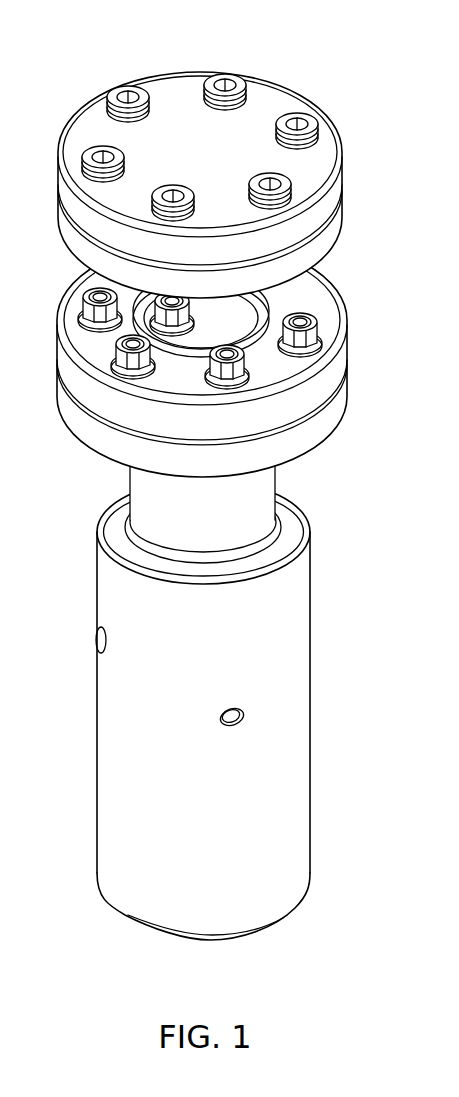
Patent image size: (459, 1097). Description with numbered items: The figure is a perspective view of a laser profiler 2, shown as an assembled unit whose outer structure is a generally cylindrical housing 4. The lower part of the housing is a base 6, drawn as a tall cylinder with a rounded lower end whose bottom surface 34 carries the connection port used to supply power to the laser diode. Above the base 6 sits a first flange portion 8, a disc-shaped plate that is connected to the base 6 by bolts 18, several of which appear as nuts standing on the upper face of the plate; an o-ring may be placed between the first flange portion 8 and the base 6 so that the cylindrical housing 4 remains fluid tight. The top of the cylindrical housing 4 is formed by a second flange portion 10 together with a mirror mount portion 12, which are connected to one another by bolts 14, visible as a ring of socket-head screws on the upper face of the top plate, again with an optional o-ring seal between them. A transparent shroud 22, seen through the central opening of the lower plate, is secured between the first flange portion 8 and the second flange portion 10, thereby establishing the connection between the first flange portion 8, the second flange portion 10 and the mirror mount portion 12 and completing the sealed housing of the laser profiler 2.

The laser profiler 2 is at (200, 242).
The cylindrical housing 4 is at (223, 710).
The base 6 is at (113, 587).
The first flange portion 8 is at (72, 367).
The second flange portion 10 is at (72, 237).
The mirror mount portion 12 is at (85, 123).
The bolts 14 is at (213, 74).
The bolts 18 is at (110, 360).
The transparent shroud 22 is at (243, 312).
The bottom surface 34 is at (262, 932).